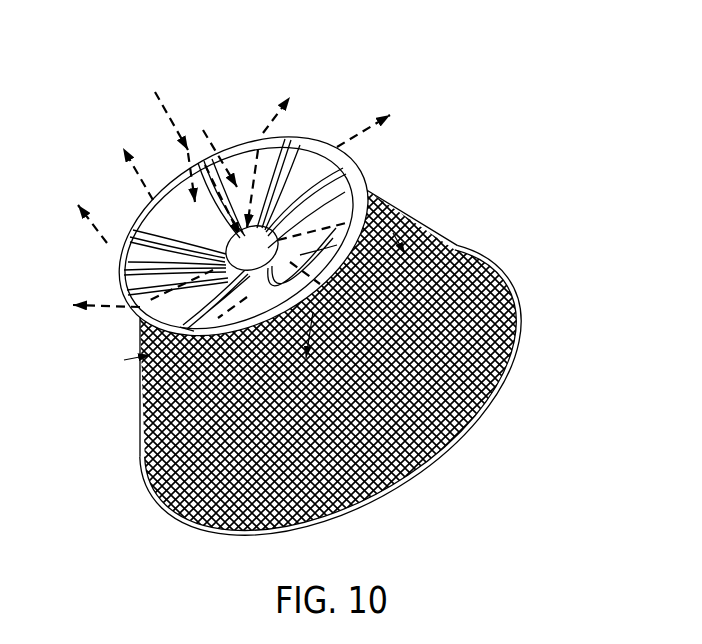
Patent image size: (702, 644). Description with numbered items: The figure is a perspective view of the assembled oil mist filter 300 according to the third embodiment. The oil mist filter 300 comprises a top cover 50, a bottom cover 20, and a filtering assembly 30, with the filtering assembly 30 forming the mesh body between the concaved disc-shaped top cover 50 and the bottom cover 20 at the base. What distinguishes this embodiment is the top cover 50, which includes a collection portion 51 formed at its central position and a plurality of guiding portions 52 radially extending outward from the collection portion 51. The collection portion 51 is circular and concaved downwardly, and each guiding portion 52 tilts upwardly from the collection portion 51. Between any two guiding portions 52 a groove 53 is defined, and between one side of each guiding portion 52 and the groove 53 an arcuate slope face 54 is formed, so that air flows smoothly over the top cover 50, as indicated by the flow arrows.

The oil mist filter 300 is at (500, 241).
The filtering assembly 30 is at (137, 402).
The bottom cover 20 is at (152, 505).
The top cover 50 is at (306, 130).
The collection portion 51 is at (265, 222).
The guiding portion 52 is at (145, 257).
The groove 53 is at (173, 200).
The arcuate slope face 54 is at (143, 247).